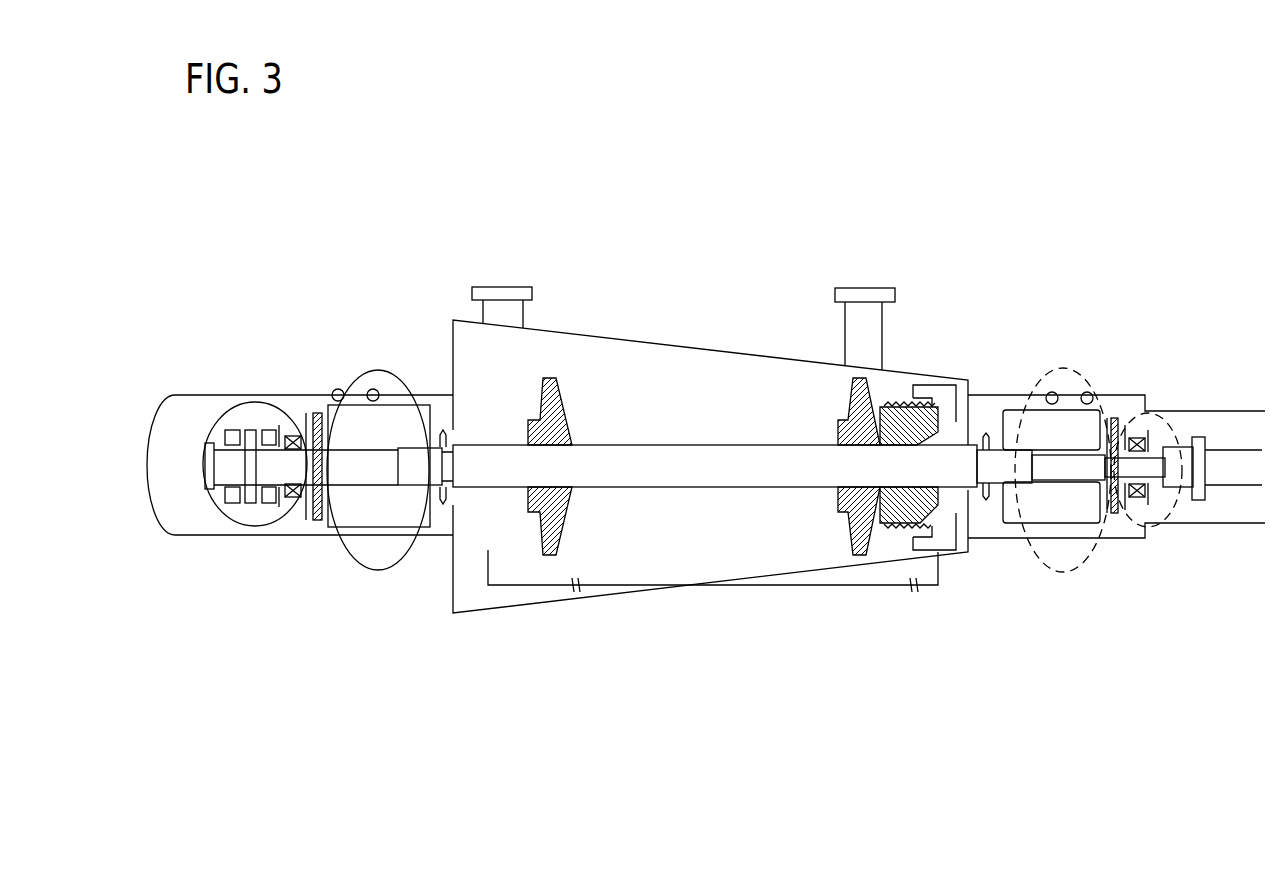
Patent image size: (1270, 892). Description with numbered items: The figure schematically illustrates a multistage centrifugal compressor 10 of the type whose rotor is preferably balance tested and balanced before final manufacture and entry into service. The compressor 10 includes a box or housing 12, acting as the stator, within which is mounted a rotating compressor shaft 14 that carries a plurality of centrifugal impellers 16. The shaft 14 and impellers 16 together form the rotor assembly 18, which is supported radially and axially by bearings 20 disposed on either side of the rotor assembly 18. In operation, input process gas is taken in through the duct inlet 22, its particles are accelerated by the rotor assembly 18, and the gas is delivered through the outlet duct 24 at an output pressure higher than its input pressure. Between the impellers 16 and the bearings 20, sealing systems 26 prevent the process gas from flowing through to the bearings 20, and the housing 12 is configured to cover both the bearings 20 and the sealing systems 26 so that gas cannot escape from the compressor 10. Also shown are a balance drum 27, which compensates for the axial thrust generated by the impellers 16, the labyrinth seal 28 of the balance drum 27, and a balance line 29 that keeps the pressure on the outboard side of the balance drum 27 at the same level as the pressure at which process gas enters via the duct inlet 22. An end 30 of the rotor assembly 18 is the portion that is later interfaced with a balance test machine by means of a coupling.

The centrifugal compressor 10 is at (551, 184).
The housing 12 is at (677, 343).
The compressor shaft 14 is at (971, 443).
The centrifugal impellers 16 is at (553, 555).
The rotor assembly 18 is at (702, 478).
The bearings 20 is at (247, 402).
The duct inlet 22 is at (483, 286).
The outlet duct 24 is at (858, 288).
The sealing systems 26 is at (371, 367).
The balance drum 27 is at (930, 523).
The labyrinth seal 28 is at (898, 404).
The balance line 29 is at (798, 587).
The rotor end 30 is at (495, 453).